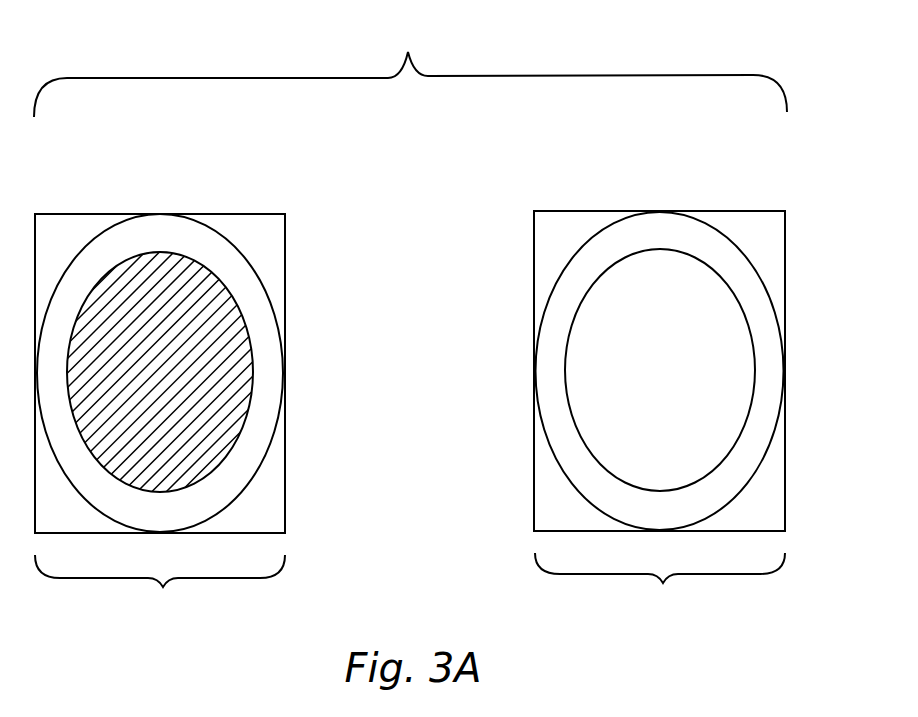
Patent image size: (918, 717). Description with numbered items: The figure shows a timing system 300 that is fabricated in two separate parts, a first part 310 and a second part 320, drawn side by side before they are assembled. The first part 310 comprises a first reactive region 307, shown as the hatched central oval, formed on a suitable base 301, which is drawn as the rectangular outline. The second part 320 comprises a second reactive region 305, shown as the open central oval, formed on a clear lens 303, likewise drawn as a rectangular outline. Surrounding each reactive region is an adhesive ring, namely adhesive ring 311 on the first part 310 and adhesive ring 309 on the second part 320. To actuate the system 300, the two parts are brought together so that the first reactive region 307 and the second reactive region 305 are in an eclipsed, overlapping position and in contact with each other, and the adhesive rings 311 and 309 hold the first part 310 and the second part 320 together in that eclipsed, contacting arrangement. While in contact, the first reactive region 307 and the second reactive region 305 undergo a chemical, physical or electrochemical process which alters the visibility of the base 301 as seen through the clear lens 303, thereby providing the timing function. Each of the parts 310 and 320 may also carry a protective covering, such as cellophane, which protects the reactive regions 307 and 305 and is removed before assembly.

The timing system 300 is at (410, 70).
The first part 310 is at (257, 386).
The second part 320 is at (701, 385).
The base 301 is at (285, 277).
The clear lens 303 is at (785, 273).
The adhesive ring 311 is at (252, 250).
The adhesive ring 309 is at (752, 253).
The first reactive region 307 is at (253, 375).
The second reactive region 305 is at (753, 373).